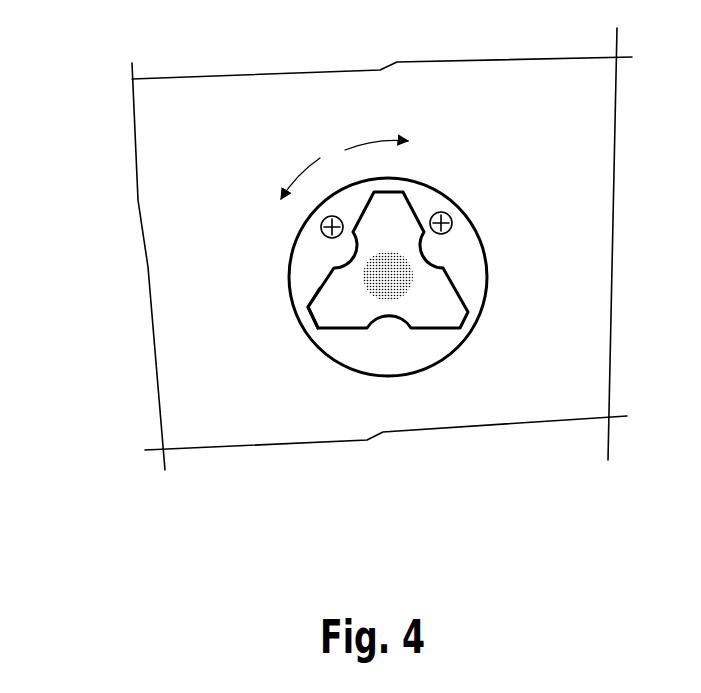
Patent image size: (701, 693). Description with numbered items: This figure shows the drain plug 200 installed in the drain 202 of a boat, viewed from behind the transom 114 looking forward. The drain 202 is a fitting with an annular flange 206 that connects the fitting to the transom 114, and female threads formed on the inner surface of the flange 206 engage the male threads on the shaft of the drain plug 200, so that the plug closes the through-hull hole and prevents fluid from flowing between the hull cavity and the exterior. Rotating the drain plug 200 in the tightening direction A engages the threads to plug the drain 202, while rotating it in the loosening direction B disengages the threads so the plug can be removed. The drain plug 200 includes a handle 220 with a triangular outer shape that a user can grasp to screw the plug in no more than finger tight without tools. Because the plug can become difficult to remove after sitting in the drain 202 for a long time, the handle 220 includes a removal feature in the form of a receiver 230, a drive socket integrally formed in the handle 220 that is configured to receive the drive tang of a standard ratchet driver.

The transom 114 is at (188, 140).
The drain plug 200 is at (466, 180).
The drain 202 is at (360, 176).
The flange 206 is at (318, 253).
The handle 220 is at (342, 316).
The receiver 230 is at (390, 292).